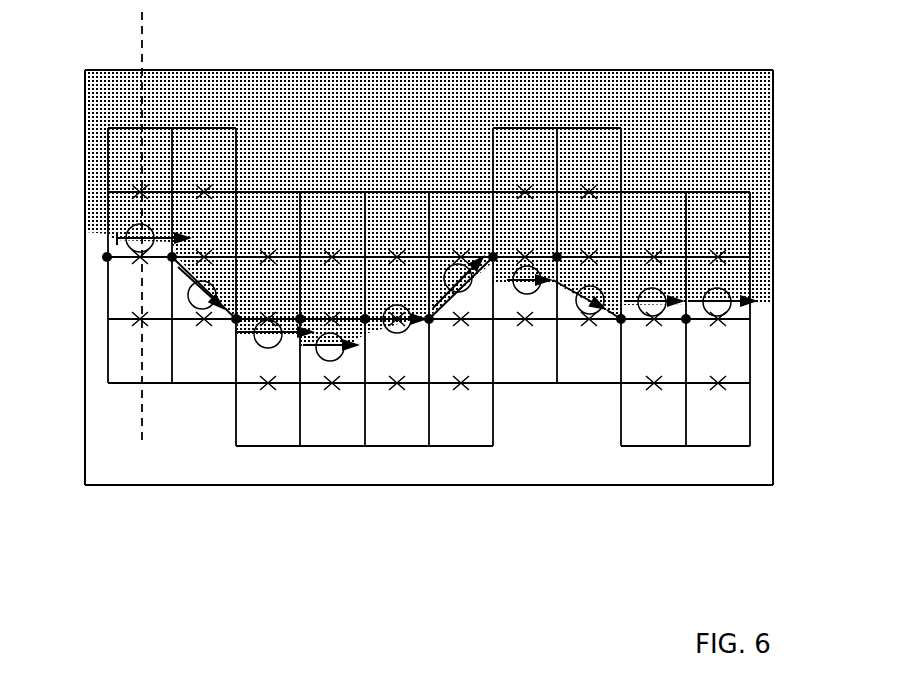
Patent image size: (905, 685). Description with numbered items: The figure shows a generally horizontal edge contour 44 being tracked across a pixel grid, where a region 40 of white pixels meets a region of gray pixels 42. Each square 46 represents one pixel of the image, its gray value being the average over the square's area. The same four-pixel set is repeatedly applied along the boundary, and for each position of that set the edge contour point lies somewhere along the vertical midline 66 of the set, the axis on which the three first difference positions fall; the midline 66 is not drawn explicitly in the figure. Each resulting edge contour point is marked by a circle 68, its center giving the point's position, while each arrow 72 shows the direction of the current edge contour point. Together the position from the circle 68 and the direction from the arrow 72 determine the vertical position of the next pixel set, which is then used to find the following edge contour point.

The region of white pixels 40 is at (204, 443).
The region of gray pixels 42 is at (381, 138).
The edge contour 44 is at (107, 253).
The square 46 is at (157, 147).
The vertical midline 66 is at (138, 30).
The circle 68 is at (192, 283).
The arrow 72 is at (117, 240).